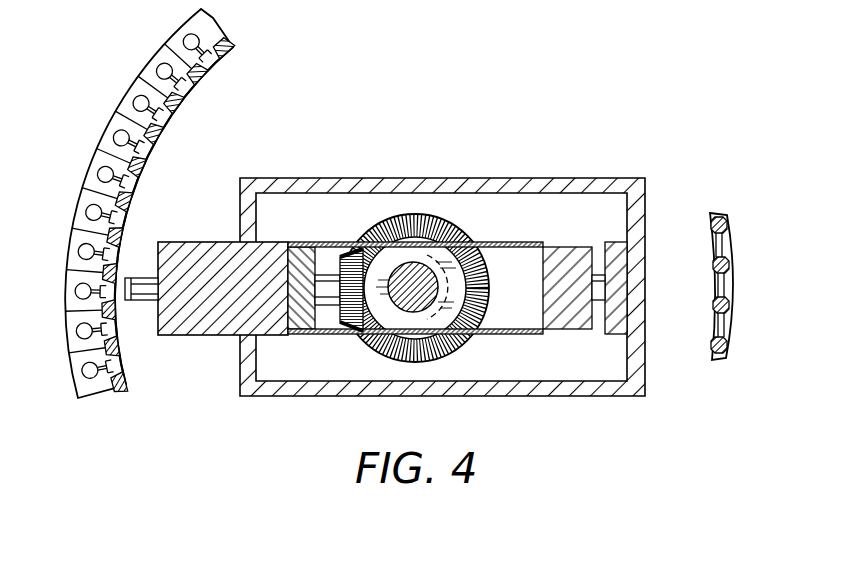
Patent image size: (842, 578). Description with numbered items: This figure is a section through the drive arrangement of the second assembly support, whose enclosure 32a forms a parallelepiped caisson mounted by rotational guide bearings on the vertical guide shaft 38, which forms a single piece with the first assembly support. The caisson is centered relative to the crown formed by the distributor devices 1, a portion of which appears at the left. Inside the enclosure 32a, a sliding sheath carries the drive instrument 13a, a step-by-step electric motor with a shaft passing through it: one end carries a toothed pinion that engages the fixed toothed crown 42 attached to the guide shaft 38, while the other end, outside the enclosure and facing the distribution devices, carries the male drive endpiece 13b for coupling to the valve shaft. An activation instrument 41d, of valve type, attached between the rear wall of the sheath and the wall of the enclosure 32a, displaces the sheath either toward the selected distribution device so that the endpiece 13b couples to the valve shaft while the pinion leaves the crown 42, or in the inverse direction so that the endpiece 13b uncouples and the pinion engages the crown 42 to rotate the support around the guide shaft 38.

The distributor device 1 is at (133, 82).
The drive instrument 13a is at (228, 242).
The male drive endpiece 13b is at (143, 300).
The enclosure 32a is at (425, 178).
The activation instrument 41d is at (598, 300).
The fixed toothed crown 42 is at (466, 234).
The vertical guide shaft 38 is at (426, 308).